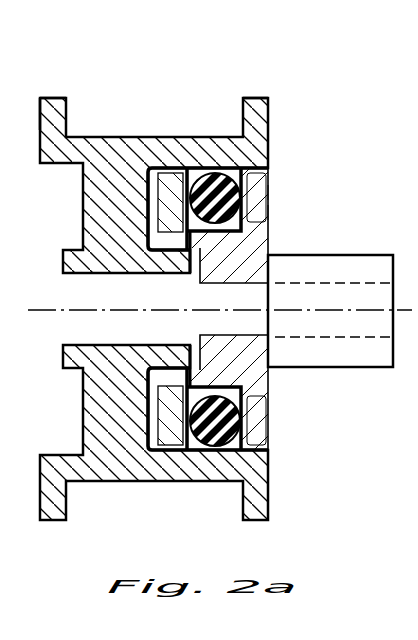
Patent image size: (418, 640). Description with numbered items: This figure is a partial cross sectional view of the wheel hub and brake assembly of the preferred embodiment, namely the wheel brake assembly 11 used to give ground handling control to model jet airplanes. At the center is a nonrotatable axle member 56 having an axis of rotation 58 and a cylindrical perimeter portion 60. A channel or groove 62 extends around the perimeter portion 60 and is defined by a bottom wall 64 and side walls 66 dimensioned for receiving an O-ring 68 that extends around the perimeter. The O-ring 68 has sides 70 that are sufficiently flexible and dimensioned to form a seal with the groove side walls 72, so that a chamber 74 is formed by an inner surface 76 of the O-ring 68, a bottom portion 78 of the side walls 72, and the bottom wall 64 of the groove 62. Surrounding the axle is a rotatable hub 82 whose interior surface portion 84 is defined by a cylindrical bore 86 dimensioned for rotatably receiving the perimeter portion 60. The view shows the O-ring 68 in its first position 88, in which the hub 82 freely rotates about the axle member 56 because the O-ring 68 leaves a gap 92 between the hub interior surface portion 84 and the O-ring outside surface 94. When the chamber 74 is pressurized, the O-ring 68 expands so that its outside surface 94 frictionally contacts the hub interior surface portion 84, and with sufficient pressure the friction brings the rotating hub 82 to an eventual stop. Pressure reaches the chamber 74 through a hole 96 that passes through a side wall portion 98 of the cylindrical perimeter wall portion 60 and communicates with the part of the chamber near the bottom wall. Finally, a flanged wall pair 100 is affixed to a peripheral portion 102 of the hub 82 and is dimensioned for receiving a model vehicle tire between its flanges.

The wheel brake assembly 11 is at (289, 72).
The axle member 56 is at (324, 379).
The axis of rotation 58 is at (100, 310).
The cylindrical perimeter portion 60 is at (262, 207).
The groove 62 is at (220, 175).
The bottom wall 64 is at (268, 236).
The side walls 66 is at (270, 432).
The O-ring 68 is at (200, 182).
The sides 70 is at (268, 212).
The groove side walls 72 is at (268, 192).
The chamber 74 is at (186, 253).
The inner surface 76 is at (212, 232).
The bottom portion 78 is at (158, 222).
The rotatable hub 82 is at (66, 240).
The interior surface portion 84 is at (233, 465).
The cylindrical bore 86 is at (268, 170).
The first position 88 is at (187, 158).
The gap 92 is at (145, 483).
The O-ring outside surface 94 is at (212, 462).
The hole 96 is at (268, 386).
The side wall portion 98 is at (150, 395).
The flanged wall pair 100 is at (66, 98).
The peripheral portion 102 is at (40, 117).